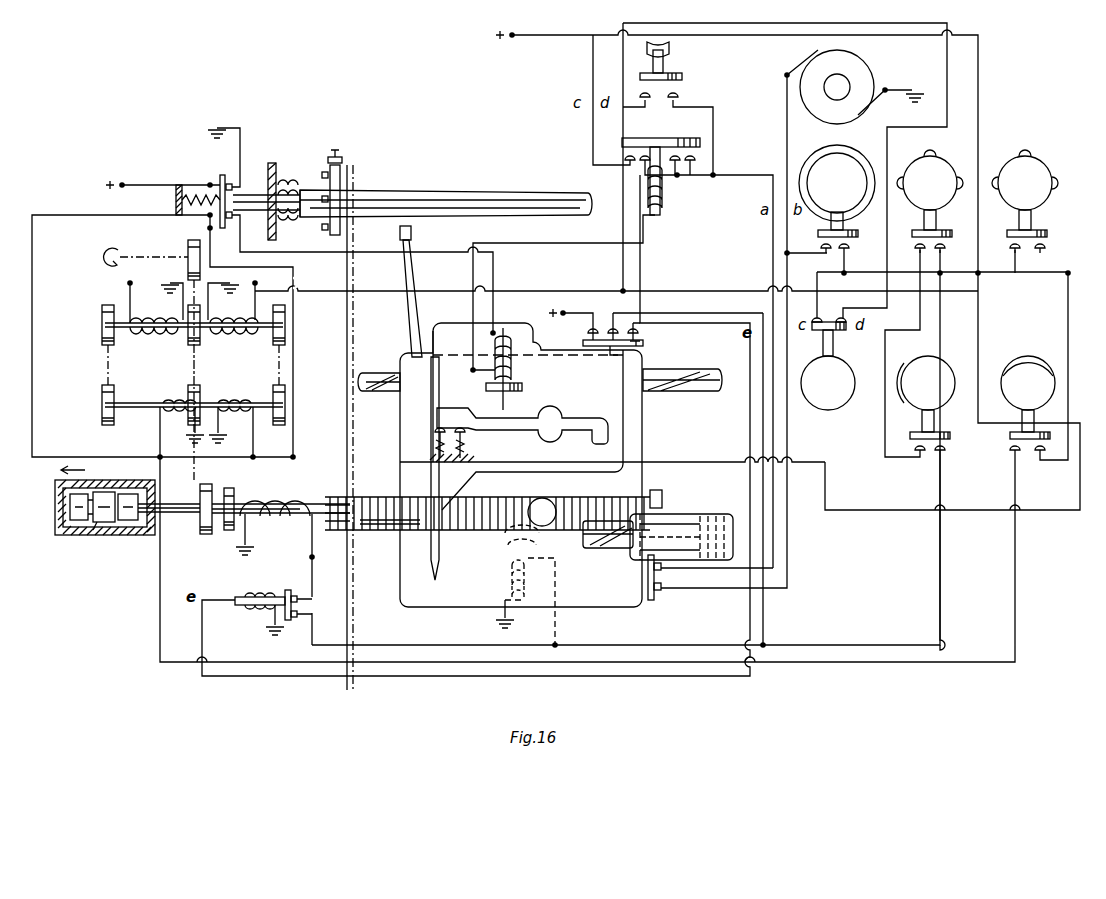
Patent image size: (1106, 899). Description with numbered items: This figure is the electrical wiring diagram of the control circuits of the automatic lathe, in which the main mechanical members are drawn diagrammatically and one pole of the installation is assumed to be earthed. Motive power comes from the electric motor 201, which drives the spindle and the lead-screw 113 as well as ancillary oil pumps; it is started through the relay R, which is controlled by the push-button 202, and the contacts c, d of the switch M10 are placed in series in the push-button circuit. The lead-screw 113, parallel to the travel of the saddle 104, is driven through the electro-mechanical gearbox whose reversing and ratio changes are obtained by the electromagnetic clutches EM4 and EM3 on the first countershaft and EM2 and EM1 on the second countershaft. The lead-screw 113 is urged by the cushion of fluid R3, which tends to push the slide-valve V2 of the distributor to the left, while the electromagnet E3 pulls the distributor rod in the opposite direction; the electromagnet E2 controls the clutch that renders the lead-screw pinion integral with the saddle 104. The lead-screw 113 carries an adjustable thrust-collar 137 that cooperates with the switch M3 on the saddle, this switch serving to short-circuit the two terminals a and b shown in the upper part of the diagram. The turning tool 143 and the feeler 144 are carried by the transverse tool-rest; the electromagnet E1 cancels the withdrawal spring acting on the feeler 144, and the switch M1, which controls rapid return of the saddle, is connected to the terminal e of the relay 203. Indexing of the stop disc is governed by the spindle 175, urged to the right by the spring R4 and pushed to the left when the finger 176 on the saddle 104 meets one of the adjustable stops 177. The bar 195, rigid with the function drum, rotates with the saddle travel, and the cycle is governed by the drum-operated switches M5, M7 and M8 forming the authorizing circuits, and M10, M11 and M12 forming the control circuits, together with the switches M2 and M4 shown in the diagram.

The saddle 104 is at (618, 600).
The lead-screw 113 is at (382, 534).
The thrust-collar 137 is at (662, 488).
The turning tool 143 is at (430, 556).
The feeler 144 is at (577, 412).
The spindle 175 is at (456, 190).
The finger 176 is at (402, 235).
The adjustable stops 177 is at (330, 234).
The bar 195 is at (388, 366).
The electric motor 201 is at (860, 68).
The push-button 202 is at (676, 70).
The relay 203 is at (256, 618).
The switch M1 is at (640, 343).
The switch M2 is at (468, 440).
The switch M3 is at (652, 605).
The switch M4 is at (220, 178).
The switch M5 is at (852, 192).
The switch M7 is at (945, 192).
The switch M8 is at (1040, 192).
The switch M10 is at (846, 392).
The switch M11 is at (946, 392).
The switch M12 is at (1046, 392).
The electromagnetic clutch EM1 is at (216, 392).
The electromagnetic clutch EM2 is at (176, 392).
The electromagnetic clutch EM3 is at (253, 306).
The electromagnetic clutch EM4 is at (171, 306).
The electromagnet E1 is at (460, 347).
The electromagnet E2 is at (508, 568).
The electromagnet E3 is at (262, 532).
The relay R is at (650, 202).
The cushion of fluid R3 is at (93, 530).
The spring R4 is at (285, 190).
The slide-valve V2 is at (132, 474).